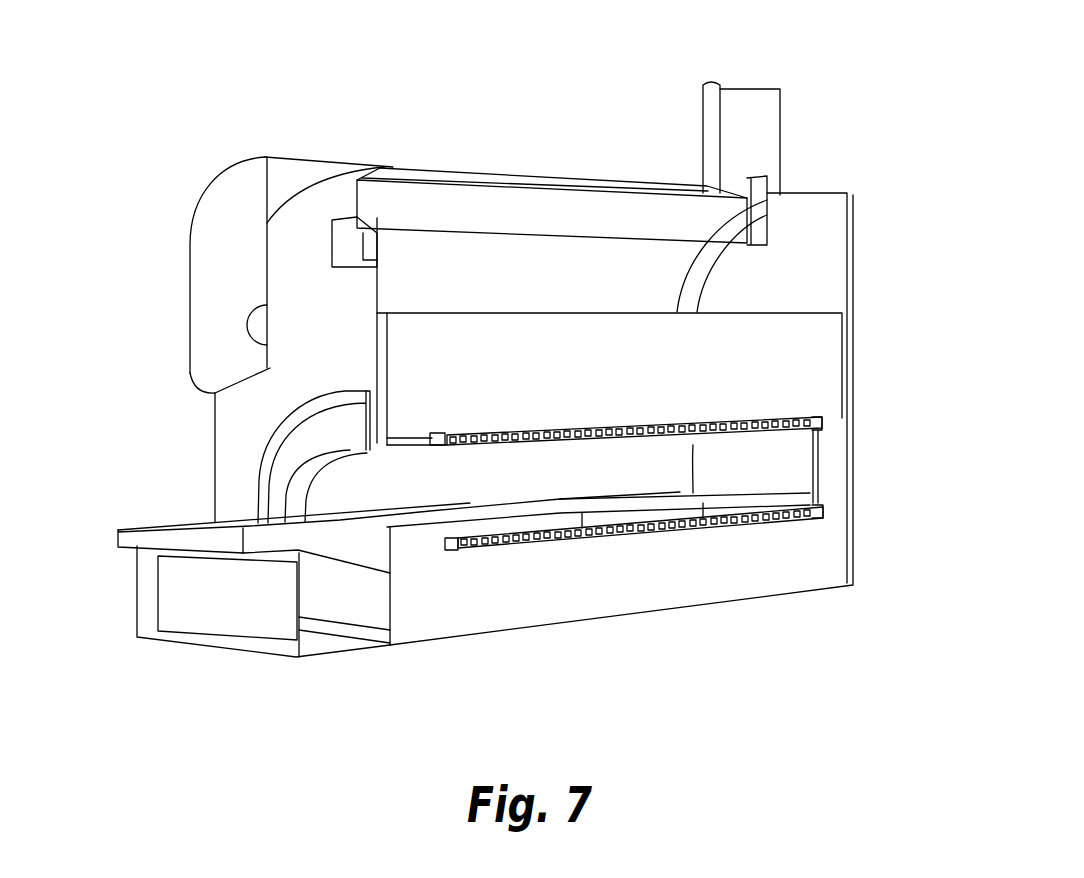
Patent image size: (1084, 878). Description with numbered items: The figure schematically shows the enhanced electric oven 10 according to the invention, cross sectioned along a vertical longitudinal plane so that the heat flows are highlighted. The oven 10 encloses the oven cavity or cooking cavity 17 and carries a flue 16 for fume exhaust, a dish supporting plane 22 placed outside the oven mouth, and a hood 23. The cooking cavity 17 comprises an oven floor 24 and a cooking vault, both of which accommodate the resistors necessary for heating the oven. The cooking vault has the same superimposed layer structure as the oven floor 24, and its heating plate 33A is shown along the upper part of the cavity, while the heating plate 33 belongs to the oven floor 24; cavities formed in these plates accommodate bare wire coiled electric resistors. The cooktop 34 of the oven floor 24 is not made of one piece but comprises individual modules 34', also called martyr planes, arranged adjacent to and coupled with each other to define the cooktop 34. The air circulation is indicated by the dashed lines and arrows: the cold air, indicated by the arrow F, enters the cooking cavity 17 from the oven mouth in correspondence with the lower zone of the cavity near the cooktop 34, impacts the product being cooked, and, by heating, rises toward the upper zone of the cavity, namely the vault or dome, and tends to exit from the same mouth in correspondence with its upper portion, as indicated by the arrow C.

The enhanced electric oven 10 is at (572, 110).
The flue 16 is at (767, 122).
The oven cavity or cooking cavity 17 is at (780, 463).
The dish supporting plane 22 is at (172, 528).
The hood 23 is at (213, 243).
The oven floor 24 is at (459, 204).
The heating plate 33 is at (460, 550).
The heating plate of the cooking vault 33A is at (790, 418).
The cooktop 34 is at (623, 579).
The individual modules (martyr planes) 34' is at (635, 590).
The arrow indicating exiting heated air C is at (753, 493).
The arrow indicating entering cold air F is at (765, 492).